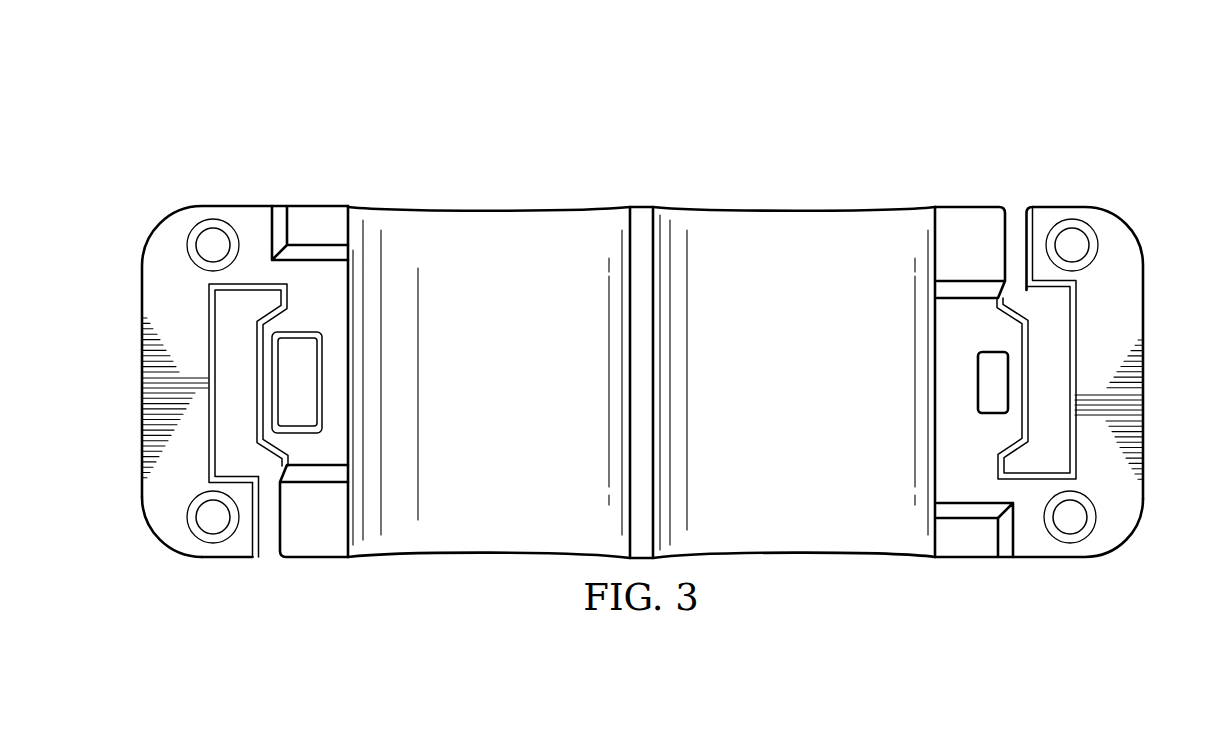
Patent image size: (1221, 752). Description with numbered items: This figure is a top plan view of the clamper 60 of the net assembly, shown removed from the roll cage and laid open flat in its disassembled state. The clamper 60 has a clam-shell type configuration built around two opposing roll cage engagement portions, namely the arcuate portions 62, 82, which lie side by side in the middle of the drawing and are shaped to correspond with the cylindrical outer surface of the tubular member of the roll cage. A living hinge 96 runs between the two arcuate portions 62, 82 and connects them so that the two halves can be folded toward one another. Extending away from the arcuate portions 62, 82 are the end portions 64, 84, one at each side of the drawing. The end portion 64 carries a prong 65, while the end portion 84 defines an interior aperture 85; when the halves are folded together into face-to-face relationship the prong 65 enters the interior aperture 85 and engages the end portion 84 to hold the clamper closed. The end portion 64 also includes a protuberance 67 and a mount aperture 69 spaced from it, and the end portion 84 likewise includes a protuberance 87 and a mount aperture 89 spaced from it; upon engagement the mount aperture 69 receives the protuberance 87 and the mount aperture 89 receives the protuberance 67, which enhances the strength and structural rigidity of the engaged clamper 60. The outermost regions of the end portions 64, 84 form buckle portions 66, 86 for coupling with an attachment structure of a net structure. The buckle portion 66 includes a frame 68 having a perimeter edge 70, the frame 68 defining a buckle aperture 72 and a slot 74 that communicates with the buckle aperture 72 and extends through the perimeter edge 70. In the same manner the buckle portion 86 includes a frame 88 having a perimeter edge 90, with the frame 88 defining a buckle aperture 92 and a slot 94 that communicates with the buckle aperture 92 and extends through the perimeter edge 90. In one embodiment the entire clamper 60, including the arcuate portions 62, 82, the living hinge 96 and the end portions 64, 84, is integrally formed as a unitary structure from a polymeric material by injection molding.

The clamper 60 is at (366, 111).
The arcuate portion 62 is at (787, 176).
The end portion 64 is at (1027, 173).
The prong 65 is at (977, 383).
The buckle portion 66 is at (1159, 238).
The protuberance 67 is at (1072, 247).
The frame 68 is at (1144, 292).
The mount aperture 69 is at (1070, 521).
The perimeter edge 70 is at (1046, 207).
The buckle aperture 72 is at (1062, 385).
The slot 74 is at (1008, 222).
The arcuate portion 82 is at (495, 176).
The end portion 84 is at (257, 176).
The interior aperture 85 is at (302, 372).
The buckle portion 86 is at (118, 495).
The protuberance 87 is at (213, 520).
The frame 88 is at (158, 539).
The mount aperture 89 is at (212, 246).
The perimeter edge 90 is at (236, 559).
The buckle aperture 92 is at (216, 383).
The slot 94 is at (263, 544).
The living hinge 96 is at (642, 218).